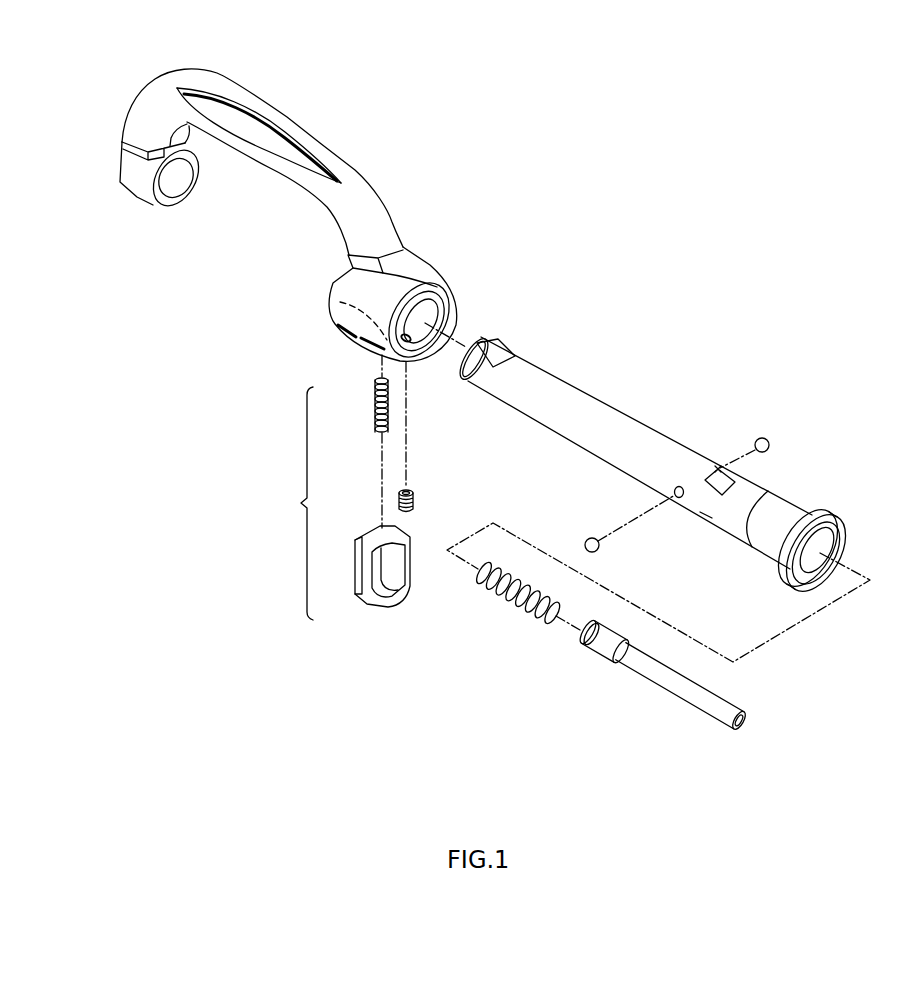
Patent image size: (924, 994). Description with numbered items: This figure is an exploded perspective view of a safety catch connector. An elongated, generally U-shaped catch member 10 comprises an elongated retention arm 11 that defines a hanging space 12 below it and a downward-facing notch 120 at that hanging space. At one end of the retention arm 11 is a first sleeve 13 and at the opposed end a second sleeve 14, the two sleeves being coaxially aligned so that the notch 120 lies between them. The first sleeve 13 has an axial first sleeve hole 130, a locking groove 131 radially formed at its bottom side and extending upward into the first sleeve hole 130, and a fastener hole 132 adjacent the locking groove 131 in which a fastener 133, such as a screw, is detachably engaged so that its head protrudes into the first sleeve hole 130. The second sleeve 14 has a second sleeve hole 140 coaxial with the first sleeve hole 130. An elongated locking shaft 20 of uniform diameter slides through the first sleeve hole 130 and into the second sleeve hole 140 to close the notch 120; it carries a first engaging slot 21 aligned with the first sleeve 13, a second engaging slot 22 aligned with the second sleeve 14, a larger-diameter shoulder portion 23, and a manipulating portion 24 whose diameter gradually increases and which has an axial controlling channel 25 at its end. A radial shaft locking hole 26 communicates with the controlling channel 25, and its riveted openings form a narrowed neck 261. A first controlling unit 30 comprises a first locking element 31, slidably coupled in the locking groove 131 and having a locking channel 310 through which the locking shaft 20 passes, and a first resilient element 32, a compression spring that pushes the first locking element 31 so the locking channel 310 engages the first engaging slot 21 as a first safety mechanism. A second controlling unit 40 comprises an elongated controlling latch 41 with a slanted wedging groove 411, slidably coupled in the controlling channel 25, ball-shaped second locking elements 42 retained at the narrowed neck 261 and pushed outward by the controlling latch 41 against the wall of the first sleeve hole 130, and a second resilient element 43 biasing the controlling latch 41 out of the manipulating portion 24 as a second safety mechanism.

The catch member 10 is at (279, 100).
The retention arm 11 is at (317, 147).
The hanging space 12 is at (217, 155).
The first sleeve 13 is at (380, 294).
The first sleeve hole 130 is at (451, 290).
The locking groove 131 is at (340, 302).
The fastener hole 132 is at (412, 338).
The fastener 133 is at (415, 496).
The second sleeve 14 is at (130, 186).
The second sleeve hole 140 is at (173, 190).
The notch 120 is at (245, 220).
The locking shaft 20 is at (615, 410).
The first engaging slot 21 is at (720, 469).
The second engaging slot 22 is at (497, 352).
The shoulder portion 23 is at (752, 505).
The manipulating portion 24 is at (785, 556).
The controlling channel 25 is at (812, 547).
The shaft locking hole 26 is at (674, 486).
The narrowed neck 261 is at (706, 515).
The first controlling unit 30 is at (377, 513).
The first locking element 31 is at (364, 594).
The locking channel 310 is at (398, 596).
The first resilient element 32 is at (377, 402).
The second controlling unit 40 is at (558, 657).
The controlling latch 41 is at (680, 690).
The wedging groove 411 is at (600, 647).
The second locking element 42 is at (769, 440).
The second resilient element 43 is at (505, 592).